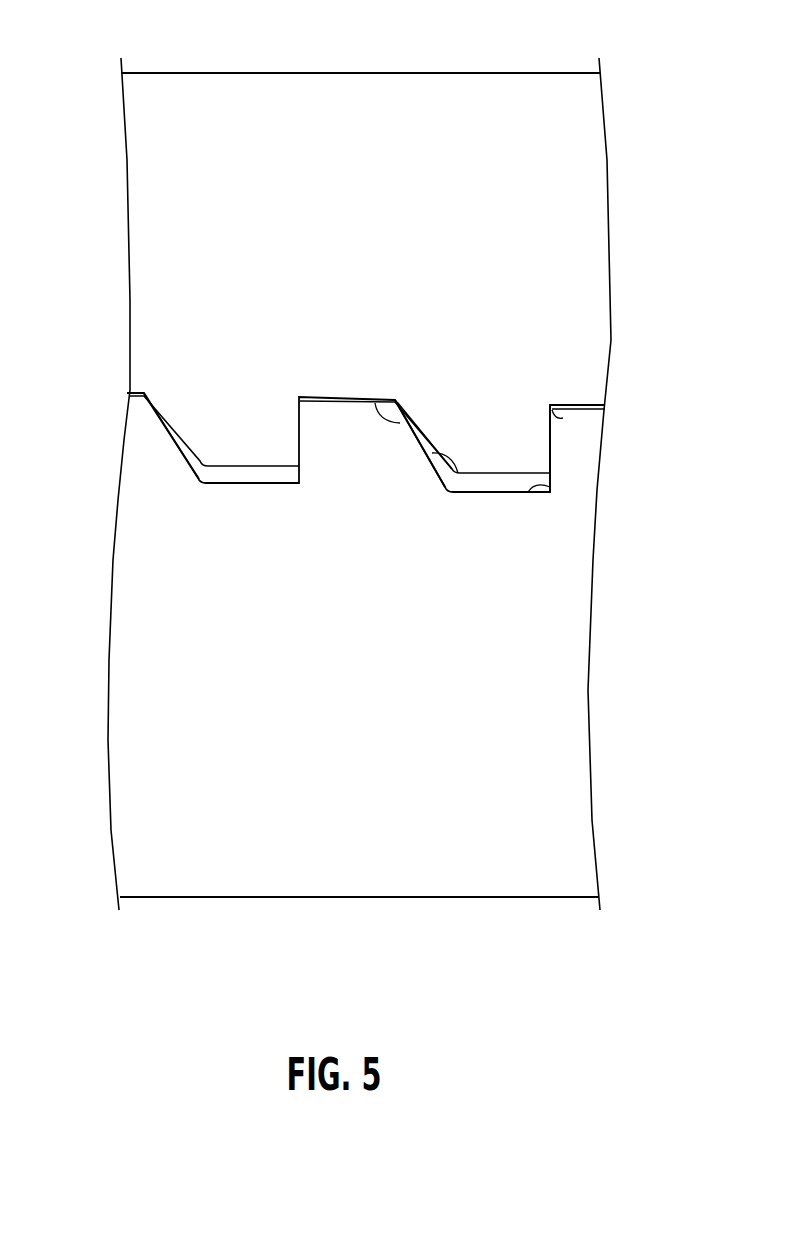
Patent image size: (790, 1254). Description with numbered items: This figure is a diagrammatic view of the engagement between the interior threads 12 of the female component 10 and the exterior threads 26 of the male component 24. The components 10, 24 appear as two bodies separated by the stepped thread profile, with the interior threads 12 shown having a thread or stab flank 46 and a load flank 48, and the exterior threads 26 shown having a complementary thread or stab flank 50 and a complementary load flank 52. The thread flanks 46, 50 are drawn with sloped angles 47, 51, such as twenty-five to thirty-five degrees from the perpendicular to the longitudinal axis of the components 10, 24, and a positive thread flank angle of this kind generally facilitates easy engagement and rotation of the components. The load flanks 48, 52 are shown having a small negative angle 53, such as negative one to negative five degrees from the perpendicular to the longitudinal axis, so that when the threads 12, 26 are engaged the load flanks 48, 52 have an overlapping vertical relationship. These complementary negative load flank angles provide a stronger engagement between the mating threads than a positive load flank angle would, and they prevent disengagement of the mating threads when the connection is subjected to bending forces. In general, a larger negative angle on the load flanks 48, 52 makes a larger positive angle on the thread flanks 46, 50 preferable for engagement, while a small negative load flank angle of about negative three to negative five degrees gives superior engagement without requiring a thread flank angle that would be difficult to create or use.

The female component 10 is at (377, 835).
The interior threads 12 is at (340, 447).
The male component 24 is at (378, 137).
The exterior threads 26 is at (205, 433).
The stab flank 46 is at (418, 432).
The sloped angle 47 is at (378, 419).
The load flank 48 is at (550, 442).
The complementary stab flank 50 is at (427, 453).
The sloped angle 51 is at (452, 457).
The complementary load flank 52 is at (552, 457).
The negative angle 53 is at (557, 415).